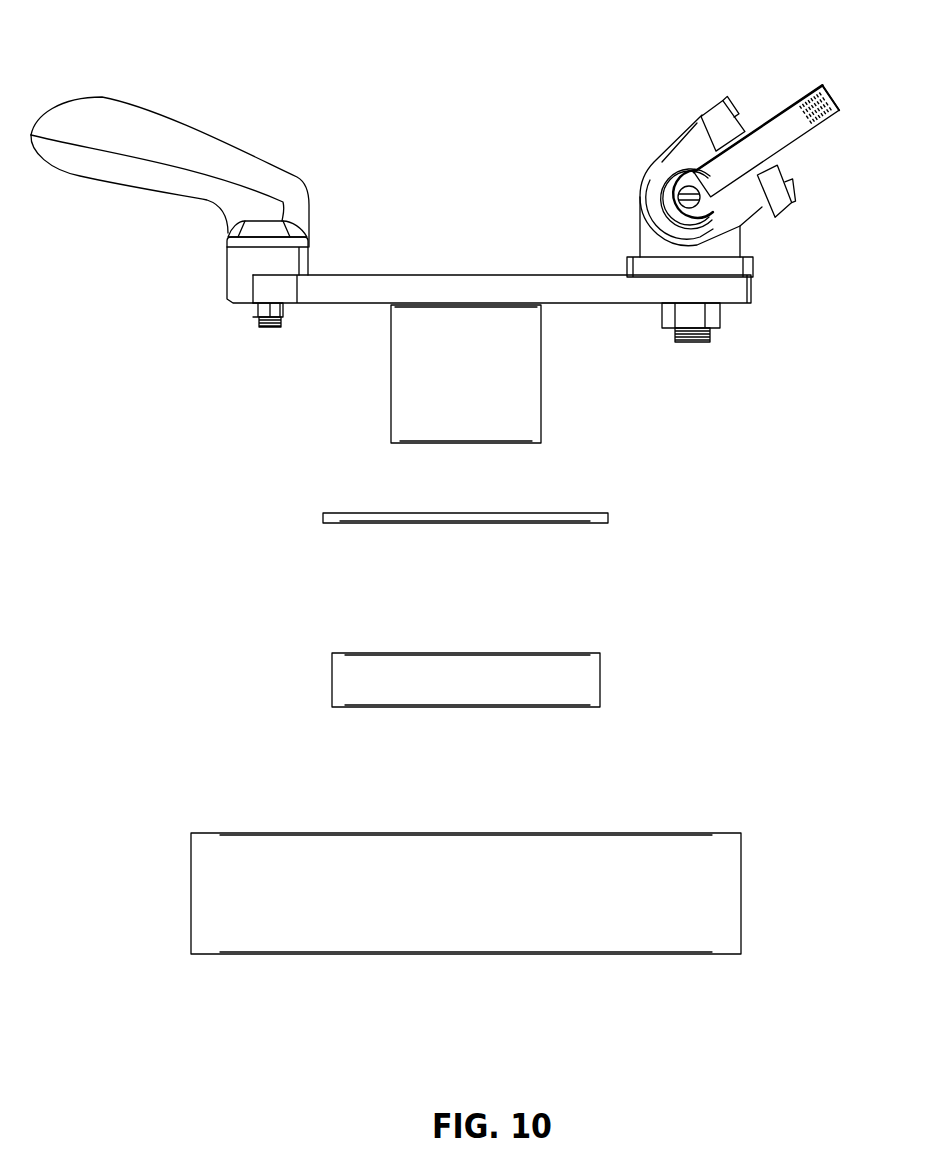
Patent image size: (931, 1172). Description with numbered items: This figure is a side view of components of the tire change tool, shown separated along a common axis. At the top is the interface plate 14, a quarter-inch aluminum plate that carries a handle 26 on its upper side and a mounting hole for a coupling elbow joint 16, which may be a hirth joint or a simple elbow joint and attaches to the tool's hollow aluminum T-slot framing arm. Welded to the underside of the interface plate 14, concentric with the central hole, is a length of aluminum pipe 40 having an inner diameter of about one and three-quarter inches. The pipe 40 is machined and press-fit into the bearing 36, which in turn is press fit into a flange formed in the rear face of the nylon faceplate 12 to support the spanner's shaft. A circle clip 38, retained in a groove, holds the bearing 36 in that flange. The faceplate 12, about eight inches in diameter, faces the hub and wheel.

The faceplate 12 is at (479, 901).
The interface plate 14 is at (440, 290).
The coupling elbow joint 16 is at (728, 128).
The handle 26 is at (197, 153).
The bearing 36 is at (582, 678).
The circle clip 38 is at (602, 517).
The aluminum pipe 40 is at (520, 412).